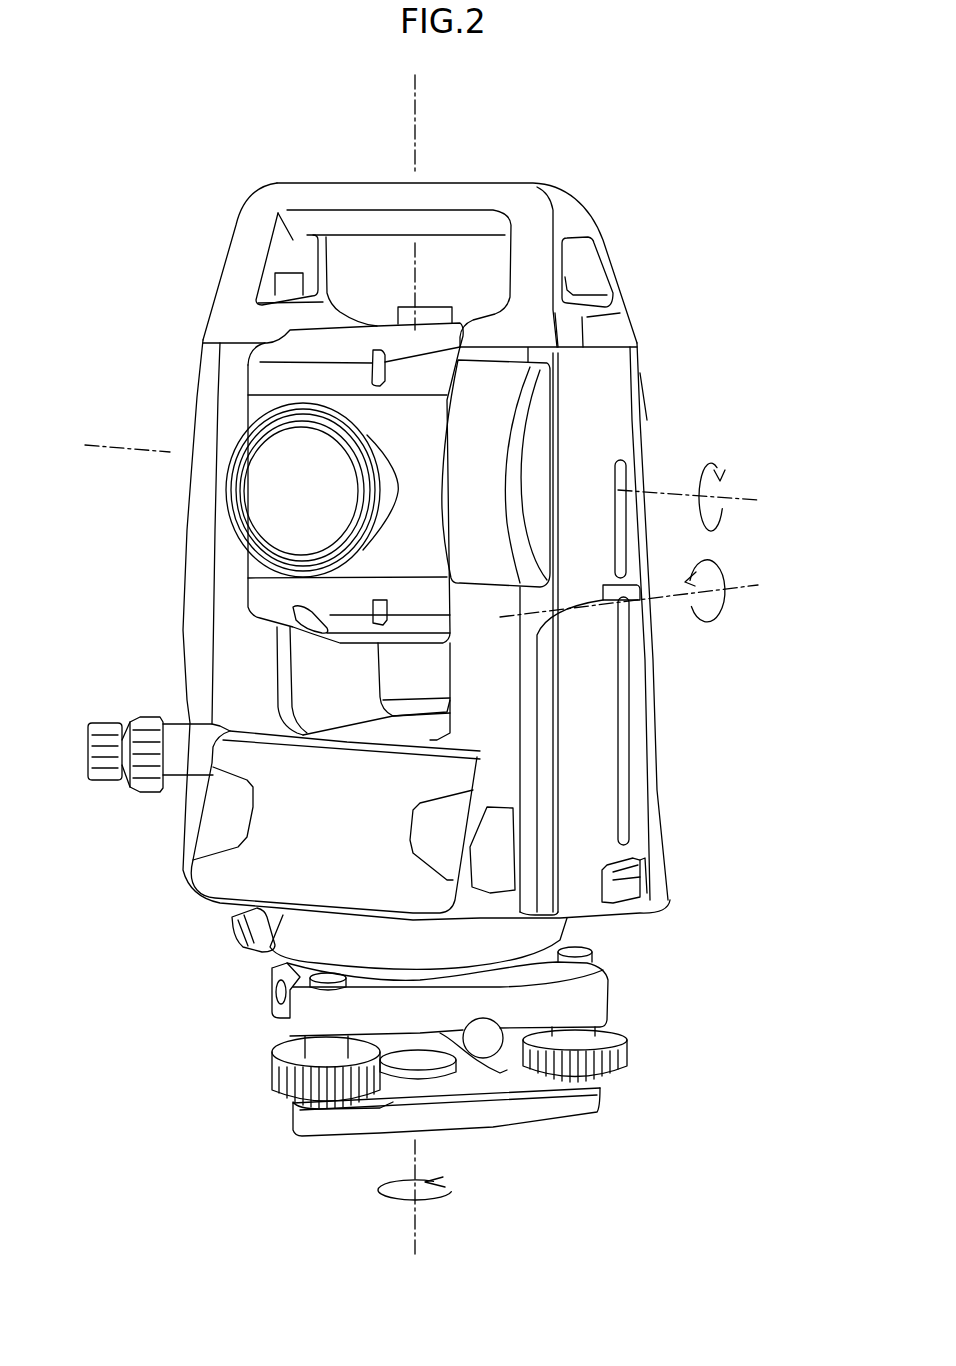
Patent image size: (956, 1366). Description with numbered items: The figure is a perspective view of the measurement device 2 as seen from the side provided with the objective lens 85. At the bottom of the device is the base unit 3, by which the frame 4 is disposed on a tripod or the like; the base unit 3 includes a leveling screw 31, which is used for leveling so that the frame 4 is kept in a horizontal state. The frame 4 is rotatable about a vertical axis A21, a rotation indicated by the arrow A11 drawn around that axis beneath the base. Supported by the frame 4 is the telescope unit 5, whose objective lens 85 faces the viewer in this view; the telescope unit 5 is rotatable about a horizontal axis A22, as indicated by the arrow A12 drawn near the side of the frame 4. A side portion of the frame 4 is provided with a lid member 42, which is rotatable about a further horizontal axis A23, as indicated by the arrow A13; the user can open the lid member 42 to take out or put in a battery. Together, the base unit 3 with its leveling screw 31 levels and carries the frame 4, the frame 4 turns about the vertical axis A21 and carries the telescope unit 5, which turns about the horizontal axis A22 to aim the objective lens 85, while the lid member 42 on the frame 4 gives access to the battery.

The measurement device 2 is at (612, 154).
The base unit 3 is at (268, 1061).
The leveling screw 31 is at (272, 1080).
The frame 4 is at (620, 373).
The lid member 42 is at (637, 778).
The telescope unit 5 is at (282, 353).
The objective lens 85 is at (298, 497).
The arrow A11 is at (427, 1200).
The arrow A12 is at (712, 465).
The arrow A13 is at (747, 548).
The vertical axis A21 is at (413, 1223).
The horizontal axis A22 is at (748, 497).
The horizontal axis A23 is at (747, 588).